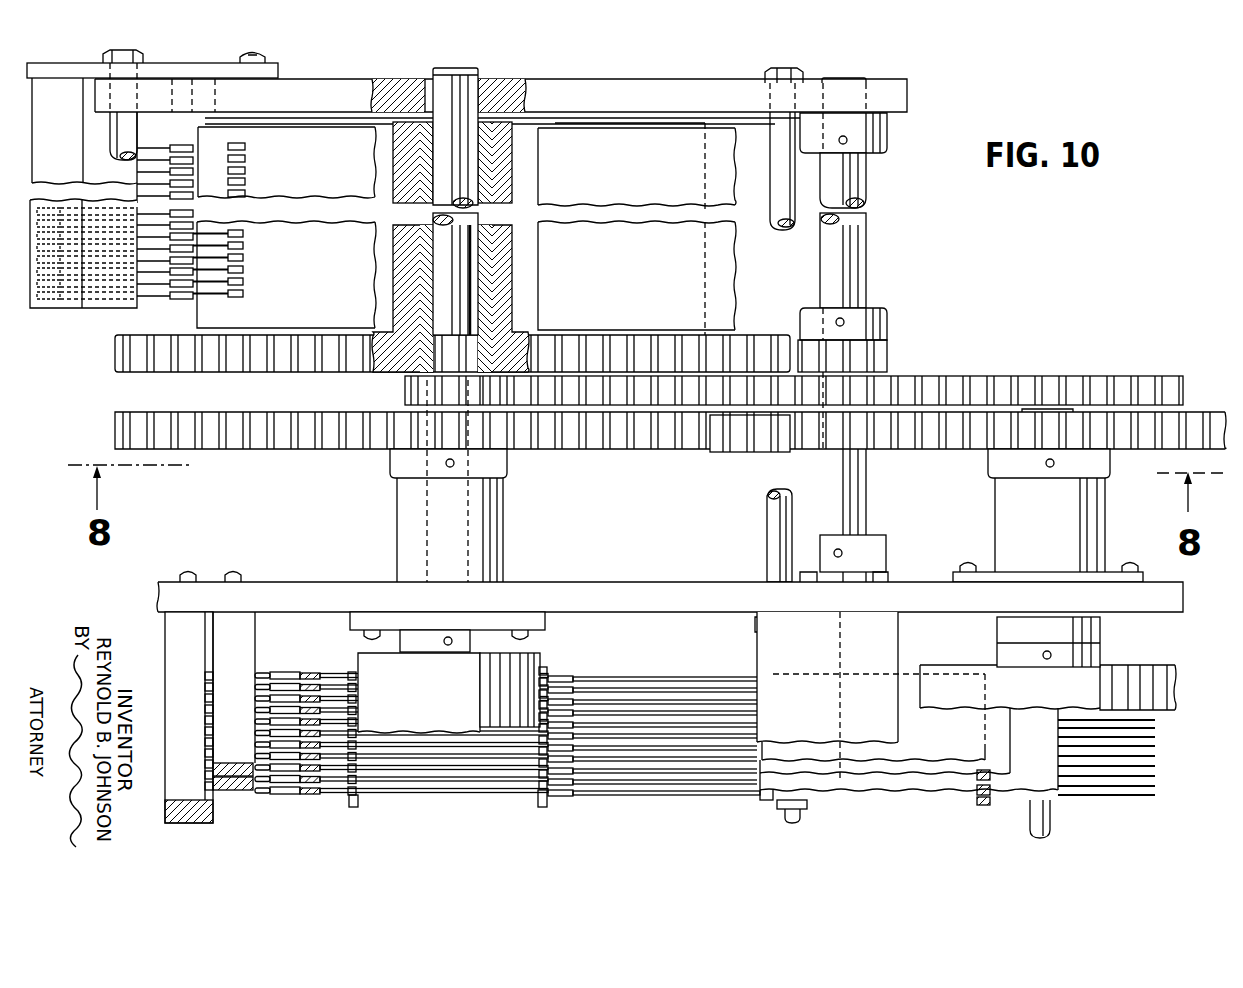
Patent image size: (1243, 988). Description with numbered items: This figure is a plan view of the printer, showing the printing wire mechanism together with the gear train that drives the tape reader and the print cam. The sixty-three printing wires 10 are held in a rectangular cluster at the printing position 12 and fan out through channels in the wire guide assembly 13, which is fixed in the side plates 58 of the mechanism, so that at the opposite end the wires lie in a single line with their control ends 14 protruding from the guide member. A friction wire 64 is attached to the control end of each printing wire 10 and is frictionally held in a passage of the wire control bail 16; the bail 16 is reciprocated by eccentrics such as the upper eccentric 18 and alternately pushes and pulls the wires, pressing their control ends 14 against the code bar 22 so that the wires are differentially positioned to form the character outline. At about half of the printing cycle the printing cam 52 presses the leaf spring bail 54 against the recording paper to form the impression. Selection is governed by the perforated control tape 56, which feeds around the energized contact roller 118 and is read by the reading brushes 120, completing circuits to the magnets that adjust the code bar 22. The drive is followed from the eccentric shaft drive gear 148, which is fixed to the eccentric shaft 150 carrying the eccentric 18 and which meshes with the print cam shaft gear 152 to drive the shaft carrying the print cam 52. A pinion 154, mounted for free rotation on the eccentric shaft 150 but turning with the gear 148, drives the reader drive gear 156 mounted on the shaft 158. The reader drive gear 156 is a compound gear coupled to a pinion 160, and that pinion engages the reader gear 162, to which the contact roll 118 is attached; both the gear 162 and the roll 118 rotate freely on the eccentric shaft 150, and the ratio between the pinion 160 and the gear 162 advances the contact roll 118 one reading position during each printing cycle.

The printing wire 10 is at (315, 680).
The printing position 12 is at (985, 803).
The wire guide assembly 13 is at (628, 684).
The control end 14 is at (258, 673).
The wire control bail 16 is at (332, 673).
The eccentric 18 is at (432, 701).
The code bar 22 is at (210, 672).
The printing cam 52 is at (1117, 676).
The leaf spring bail 54 is at (903, 682).
The control tape 56 is at (343, 277).
The side plate 58 is at (530, 588).
The friction wire 64 is at (306, 675).
The contact roller 118 is at (385, 130).
The reading brushes 120 is at (245, 276).
The eccentric shaft drive gear 148 is at (300, 442).
The eccentric shaft 150 is at (455, 92).
The print cam shaft gear 152 is at (973, 440).
The pinion 154 is at (408, 390).
The reader drive gear 156 is at (1021, 388).
The shaft 158 is at (857, 521).
The pinion 160 is at (892, 345).
The reader gear 162 is at (742, 343).